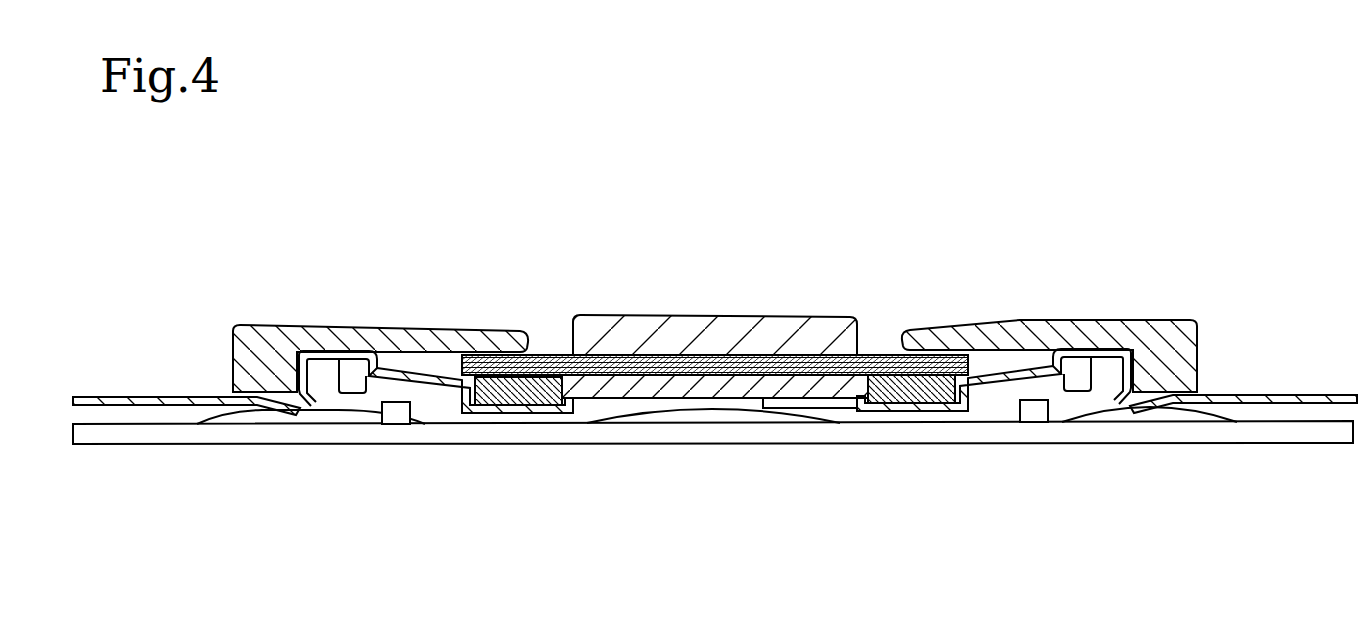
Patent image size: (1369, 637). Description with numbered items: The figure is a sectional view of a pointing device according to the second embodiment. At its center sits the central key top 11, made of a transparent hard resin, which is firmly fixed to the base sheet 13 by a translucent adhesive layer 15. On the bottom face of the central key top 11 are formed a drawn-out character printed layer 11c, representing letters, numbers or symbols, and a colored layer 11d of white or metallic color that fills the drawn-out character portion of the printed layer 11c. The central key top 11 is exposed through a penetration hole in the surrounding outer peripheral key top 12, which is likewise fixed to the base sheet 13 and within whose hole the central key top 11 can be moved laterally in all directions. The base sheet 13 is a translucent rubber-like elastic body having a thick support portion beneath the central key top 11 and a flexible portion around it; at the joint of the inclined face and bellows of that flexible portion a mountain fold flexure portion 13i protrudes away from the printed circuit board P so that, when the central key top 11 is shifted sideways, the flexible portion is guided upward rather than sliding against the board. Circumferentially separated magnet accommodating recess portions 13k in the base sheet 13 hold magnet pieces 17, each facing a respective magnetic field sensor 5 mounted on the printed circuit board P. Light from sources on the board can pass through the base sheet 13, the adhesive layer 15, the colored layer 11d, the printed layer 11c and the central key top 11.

The central key top 11 is at (799, 318).
The drawn-out character printed layer 11c is at (727, 358).
The colored layer 11d is at (628, 354).
The outer peripheral key top 12 is at (1125, 322).
The base sheet 13 is at (1245, 393).
The mountain fold flexure portion 13i is at (373, 360).
The magnet accommodating recess portion 13k is at (493, 414).
The adhesive layer 15 is at (612, 398).
The magnet piece 17 is at (540, 406).
The magnetic field sensor 5 is at (420, 418).
The printed circuit board P is at (1275, 444).